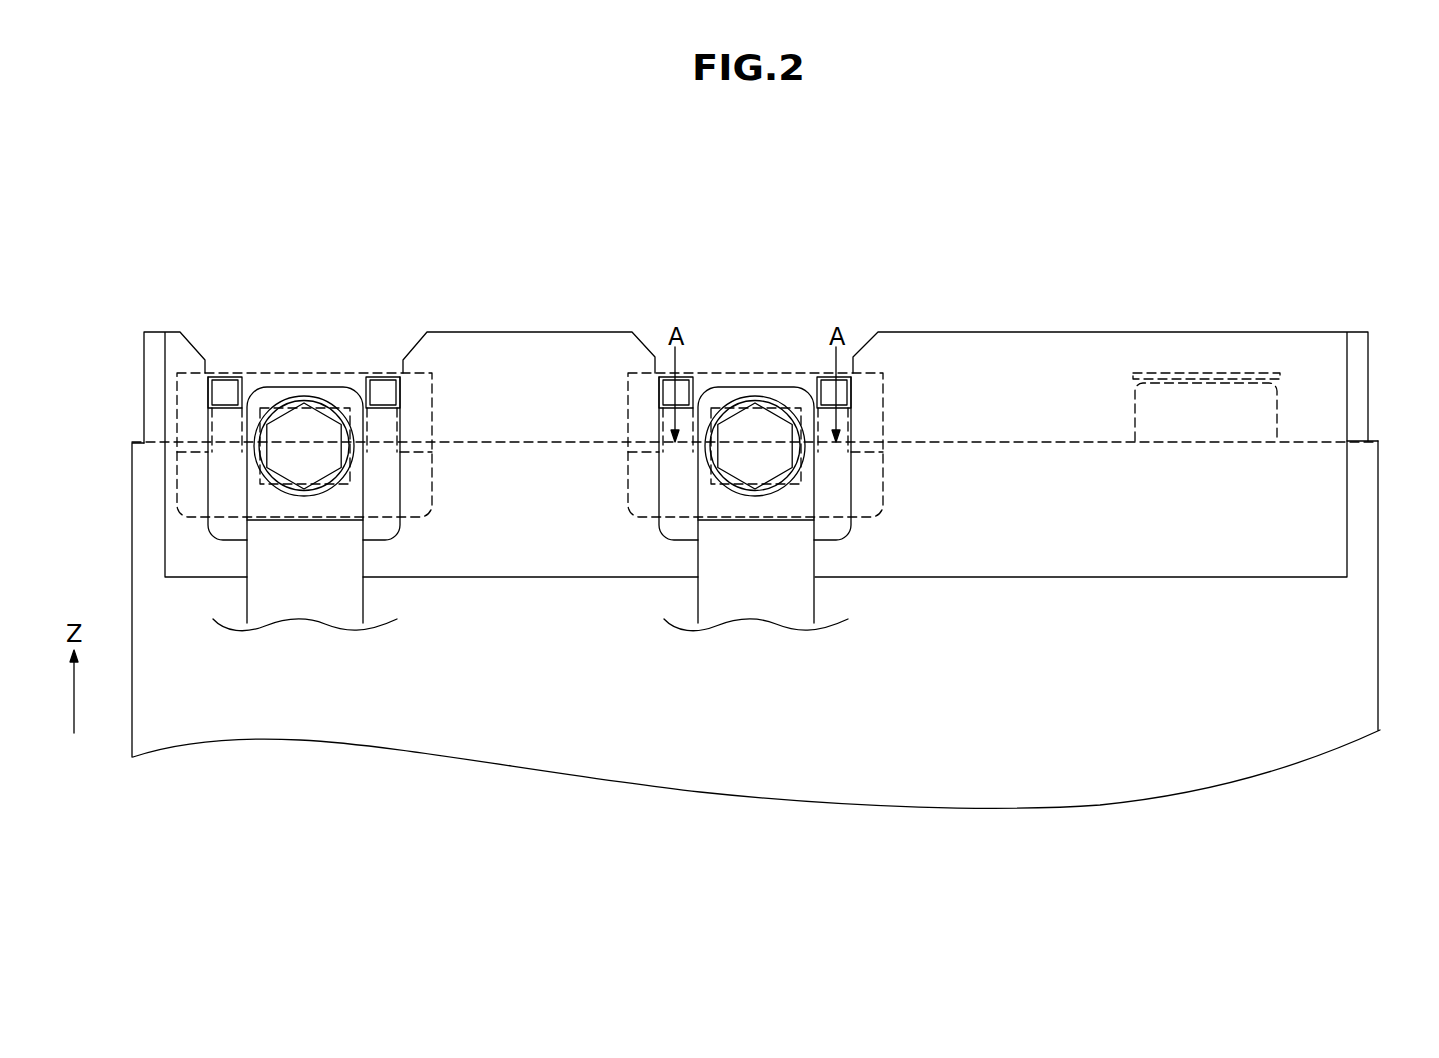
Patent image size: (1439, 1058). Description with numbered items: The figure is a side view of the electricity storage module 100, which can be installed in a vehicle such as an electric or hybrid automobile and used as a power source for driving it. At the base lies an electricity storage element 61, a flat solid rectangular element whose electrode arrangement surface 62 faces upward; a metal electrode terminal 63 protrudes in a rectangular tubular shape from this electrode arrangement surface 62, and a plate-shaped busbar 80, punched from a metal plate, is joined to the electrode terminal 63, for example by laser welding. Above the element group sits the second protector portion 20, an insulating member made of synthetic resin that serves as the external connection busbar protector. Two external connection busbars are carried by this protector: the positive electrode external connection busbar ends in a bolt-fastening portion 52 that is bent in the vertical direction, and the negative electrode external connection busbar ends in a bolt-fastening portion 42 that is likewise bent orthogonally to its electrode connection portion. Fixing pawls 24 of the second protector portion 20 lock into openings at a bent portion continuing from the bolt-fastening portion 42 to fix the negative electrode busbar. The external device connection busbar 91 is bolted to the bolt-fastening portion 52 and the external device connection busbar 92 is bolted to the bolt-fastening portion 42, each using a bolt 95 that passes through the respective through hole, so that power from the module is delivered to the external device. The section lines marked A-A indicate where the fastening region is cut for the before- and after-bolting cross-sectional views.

The second protector portion 20 is at (1072, 328).
The fixing pawls 24 is at (228, 392).
The bolt-fastening portion 42 is at (753, 378).
The bolt-fastening portion 52 is at (298, 378).
The electricity storage element 61 is at (1360, 642).
The electrode arrangement surface 62 is at (1372, 436).
The electrode terminal 63 is at (1277, 403).
The busbar 80 is at (1257, 383).
The external device connection busbar 91 is at (288, 595).
The external device connection busbar 92 is at (745, 593).
The bolt 95 is at (303, 443).
The electricity storage module 100 is at (863, 895).